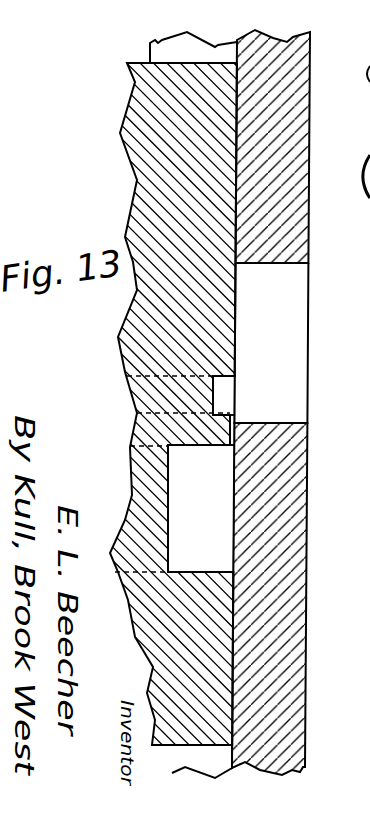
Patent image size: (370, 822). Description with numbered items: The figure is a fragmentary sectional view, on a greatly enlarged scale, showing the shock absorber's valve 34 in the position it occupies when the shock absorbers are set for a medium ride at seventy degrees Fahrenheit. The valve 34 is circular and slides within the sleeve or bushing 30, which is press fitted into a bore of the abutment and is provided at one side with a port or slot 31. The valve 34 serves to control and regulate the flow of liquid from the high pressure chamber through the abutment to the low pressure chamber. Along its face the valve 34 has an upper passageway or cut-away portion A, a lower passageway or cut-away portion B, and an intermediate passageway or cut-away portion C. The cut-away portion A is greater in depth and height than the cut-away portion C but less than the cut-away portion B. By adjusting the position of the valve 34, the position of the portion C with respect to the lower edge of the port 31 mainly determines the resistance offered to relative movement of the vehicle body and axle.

The sleeve or bushing 30 is at (298, 219).
The port or slot 31 is at (293, 296).
The valve 34 is at (138, 355).
The upper passageway or cut-away portion A is at (213, 395).
The lower passageway or cut-away portion B is at (168, 491).
The intermediate passageway or cut-away portion C is at (237, 418).